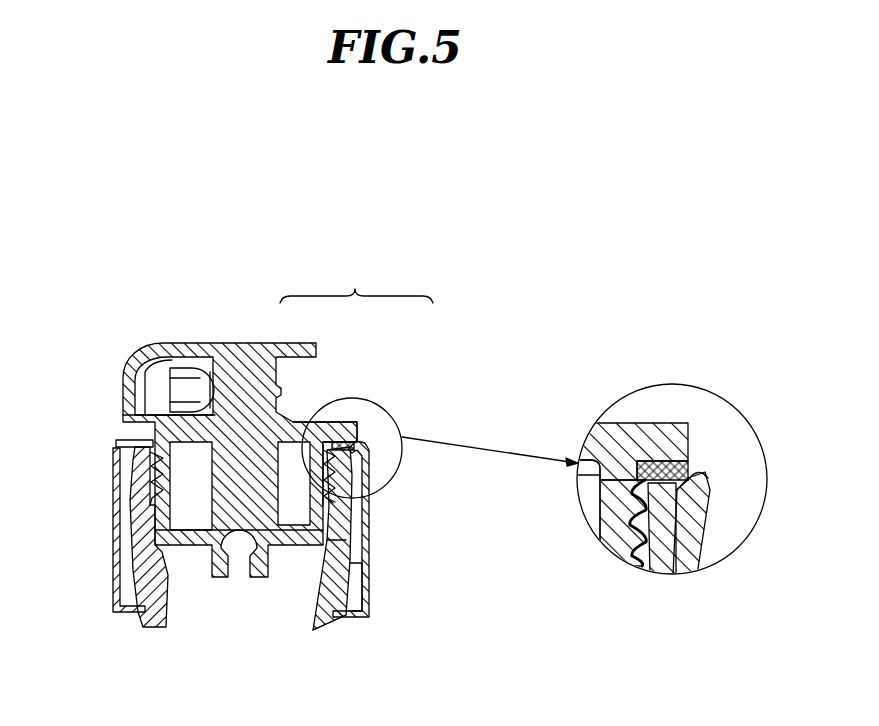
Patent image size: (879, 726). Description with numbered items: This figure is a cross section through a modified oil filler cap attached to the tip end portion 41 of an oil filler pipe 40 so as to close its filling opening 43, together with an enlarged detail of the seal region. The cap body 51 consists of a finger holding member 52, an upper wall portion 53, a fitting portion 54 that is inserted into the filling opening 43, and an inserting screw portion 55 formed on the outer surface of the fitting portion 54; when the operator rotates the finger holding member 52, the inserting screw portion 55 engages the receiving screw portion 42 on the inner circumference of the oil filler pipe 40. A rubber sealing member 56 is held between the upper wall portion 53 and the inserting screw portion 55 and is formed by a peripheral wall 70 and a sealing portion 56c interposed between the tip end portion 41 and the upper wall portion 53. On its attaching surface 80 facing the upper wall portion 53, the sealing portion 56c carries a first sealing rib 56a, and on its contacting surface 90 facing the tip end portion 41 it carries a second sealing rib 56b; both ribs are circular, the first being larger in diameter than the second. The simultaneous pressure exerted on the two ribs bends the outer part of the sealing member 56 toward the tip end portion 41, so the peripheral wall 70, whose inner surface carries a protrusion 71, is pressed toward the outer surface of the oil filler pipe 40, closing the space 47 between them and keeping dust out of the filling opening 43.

The oil filler pipe 40 is at (330, 623).
The tip end portion 41 is at (657, 563).
The receiving screw portion 42 is at (330, 500).
The filling opening 43 is at (192, 572).
The space 47 is at (332, 527).
The cap body 51 is at (356, 284).
The finger holding member 52 is at (246, 355).
The upper wall portion 53 is at (303, 455).
The fitting portion 54 is at (120, 423).
The inserting screw portion 55 is at (333, 458).
The sealing member 56 is at (700, 478).
The first sealing rib 56a is at (120, 437).
The second sealing rib 56b is at (117, 468).
The sealing portion 56c is at (705, 472).
The peripheral wall 70 is at (345, 527).
The protrusion 71 is at (368, 548).
The attaching surface 80 is at (653, 460).
The contacting surface 90 is at (657, 490).